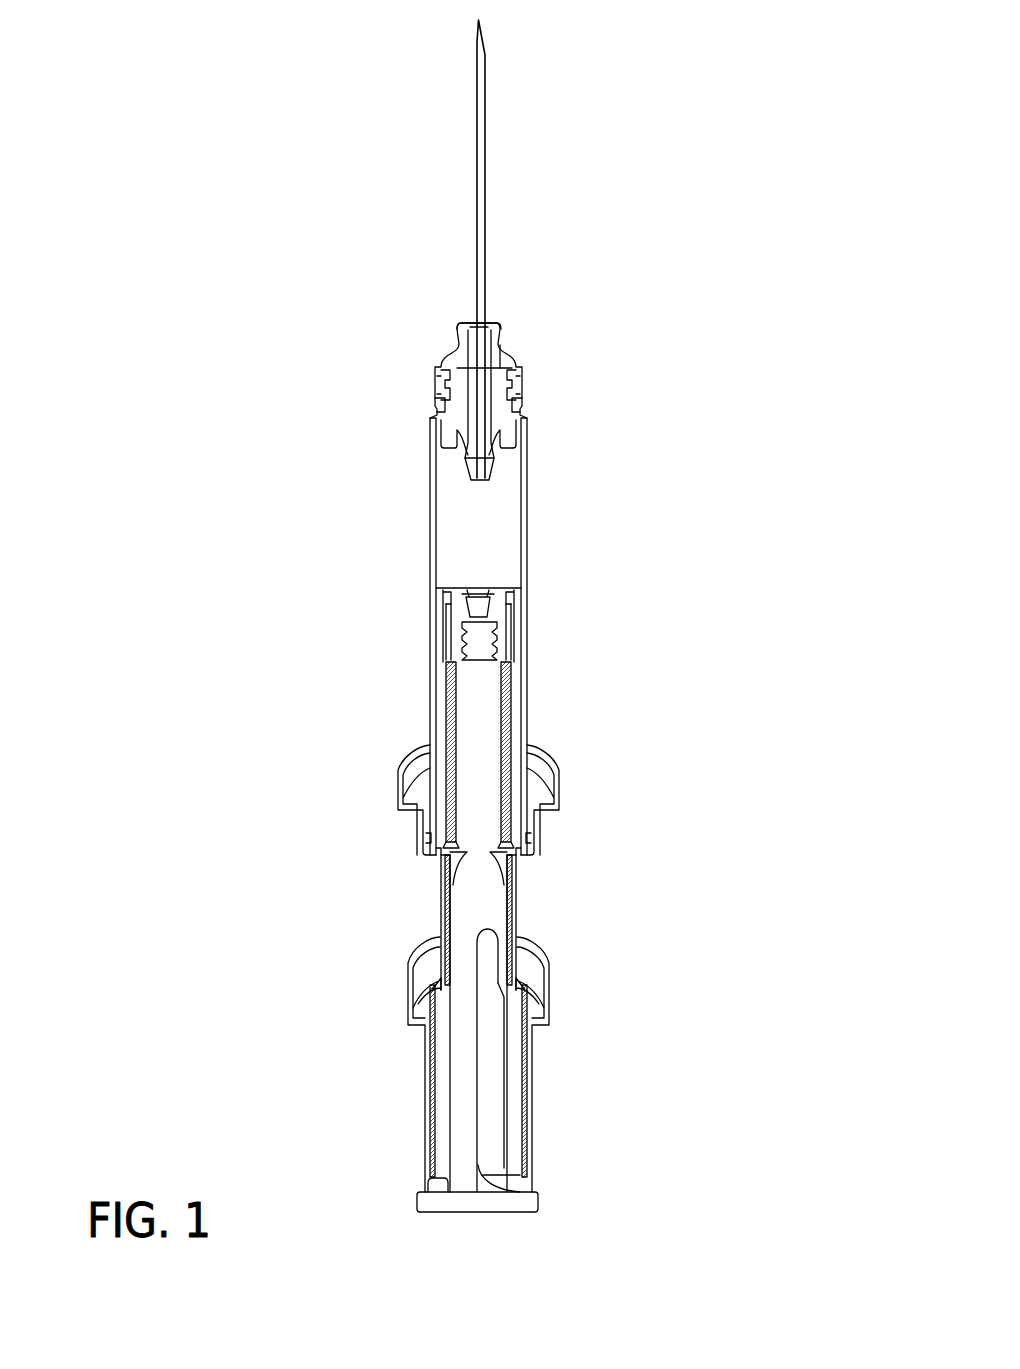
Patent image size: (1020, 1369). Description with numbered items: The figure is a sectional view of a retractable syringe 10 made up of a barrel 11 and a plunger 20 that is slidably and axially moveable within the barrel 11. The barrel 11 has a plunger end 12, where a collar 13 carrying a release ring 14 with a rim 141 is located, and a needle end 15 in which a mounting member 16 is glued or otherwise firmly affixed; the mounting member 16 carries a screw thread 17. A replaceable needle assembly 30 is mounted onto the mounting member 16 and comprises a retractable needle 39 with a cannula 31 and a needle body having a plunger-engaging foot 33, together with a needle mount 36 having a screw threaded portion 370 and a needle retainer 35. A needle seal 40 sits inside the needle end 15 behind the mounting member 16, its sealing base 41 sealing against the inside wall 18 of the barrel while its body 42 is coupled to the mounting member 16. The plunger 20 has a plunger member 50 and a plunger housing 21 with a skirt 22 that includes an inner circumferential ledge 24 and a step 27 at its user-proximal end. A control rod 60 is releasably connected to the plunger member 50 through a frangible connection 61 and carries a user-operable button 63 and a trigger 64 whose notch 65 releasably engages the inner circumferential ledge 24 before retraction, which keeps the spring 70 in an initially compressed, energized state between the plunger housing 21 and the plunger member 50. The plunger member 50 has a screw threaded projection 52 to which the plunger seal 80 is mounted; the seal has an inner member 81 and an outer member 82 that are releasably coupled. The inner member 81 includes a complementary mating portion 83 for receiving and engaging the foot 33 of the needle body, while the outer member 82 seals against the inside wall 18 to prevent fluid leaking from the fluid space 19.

The syringe 10 is at (650, 90).
The barrel 11 is at (601, 592).
The plunger end 12 is at (386, 800).
The collar 13 is at (565, 790).
The release ring 14 is at (530, 860).
The rim 141 is at (432, 852).
The needle end 15 is at (336, 356).
The mounting member 16 is at (440, 405).
The screw thread 17 is at (522, 382).
The inside wall 18 is at (440, 500).
The fluid space 19 is at (461, 548).
The plunger 20 is at (386, 940).
The plunger housing 21 is at (520, 884).
The skirt 22 is at (430, 1003).
The inner circumferential ledge 24 is at (518, 1042).
The step 27 is at (440, 1192).
The replaceable needle assembly 30 is at (531, 333).
The cannula 31 is at (477, 218).
The plunger-engaging foot 33 is at (465, 470).
The needle retainer 35 is at (515, 360).
The needle mount 36 is at (455, 325).
The screw threaded portion 370 is at (440, 375).
The retractable needle 39 is at (504, 299).
The needle seal 40 is at (437, 440).
The sealing base 41 is at (500, 455).
The body 42 is at (517, 426).
The plunger member 50 is at (481, 723).
The projection 52 is at (480, 661).
The control rod 60 is at (386, 1074).
The frangible connection 61 is at (470, 868).
The button 63 is at (470, 1195).
The trigger 64 is at (500, 1010).
The notch 65 is at (515, 1040).
The spring 70 is at (455, 750).
The plunger seal 80 is at (431, 618).
The inner member 81 is at (500, 627).
The outer member 82 is at (462, 648).
The complementary mating portion 83 is at (479, 596).